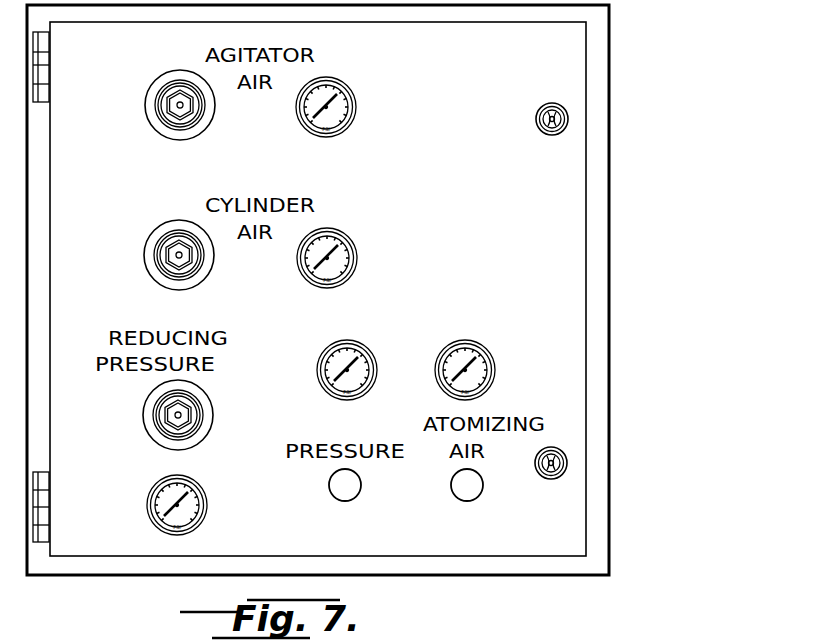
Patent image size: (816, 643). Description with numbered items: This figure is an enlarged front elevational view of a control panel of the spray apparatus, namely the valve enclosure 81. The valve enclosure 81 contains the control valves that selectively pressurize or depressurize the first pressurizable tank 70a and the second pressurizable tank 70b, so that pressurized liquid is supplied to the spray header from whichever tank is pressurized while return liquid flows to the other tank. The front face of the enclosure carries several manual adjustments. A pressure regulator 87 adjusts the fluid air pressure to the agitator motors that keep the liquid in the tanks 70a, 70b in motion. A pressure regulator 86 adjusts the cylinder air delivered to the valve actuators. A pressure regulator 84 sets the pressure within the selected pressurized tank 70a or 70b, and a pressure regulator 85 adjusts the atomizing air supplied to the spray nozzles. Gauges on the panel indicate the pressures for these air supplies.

The valve enclosure 81 is at (618, 218).
The pressure regulator 87 is at (153, 91).
The pressure regulator 86 is at (155, 239).
The first pressurizable tank 70a is at (320, 389).
The second pressurizable tank 70b is at (415, 389).
The pressure regulator 84 is at (355, 497).
The pressure regulator 85 is at (477, 497).